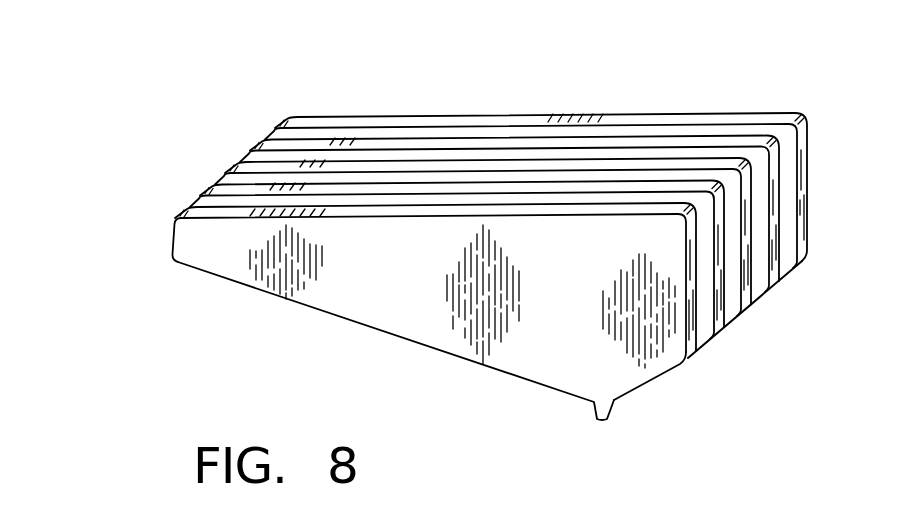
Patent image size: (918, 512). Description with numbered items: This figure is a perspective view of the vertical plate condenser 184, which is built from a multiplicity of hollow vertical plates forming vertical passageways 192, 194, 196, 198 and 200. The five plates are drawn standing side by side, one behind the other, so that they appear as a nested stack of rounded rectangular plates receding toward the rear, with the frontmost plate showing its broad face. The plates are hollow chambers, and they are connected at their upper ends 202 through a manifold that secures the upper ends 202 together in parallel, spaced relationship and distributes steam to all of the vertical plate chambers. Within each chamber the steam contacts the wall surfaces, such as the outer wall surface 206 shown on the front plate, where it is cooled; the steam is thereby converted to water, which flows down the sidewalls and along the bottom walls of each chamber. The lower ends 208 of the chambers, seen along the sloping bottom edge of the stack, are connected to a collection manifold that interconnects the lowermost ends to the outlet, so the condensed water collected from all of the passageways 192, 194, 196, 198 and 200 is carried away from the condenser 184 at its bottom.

The vertical plate condenser 184 is at (596, 104).
The vertical passageway 192 is at (186, 215).
The vertical passageway 194 is at (213, 186).
The vertical passageway 196 is at (238, 164).
The vertical passageway 198 is at (270, 138).
The vertical passageway 200 is at (320, 120).
The upper ends 202 is at (174, 266).
The outer wall surface 206 is at (405, 320).
The lower ends 208 is at (667, 380).